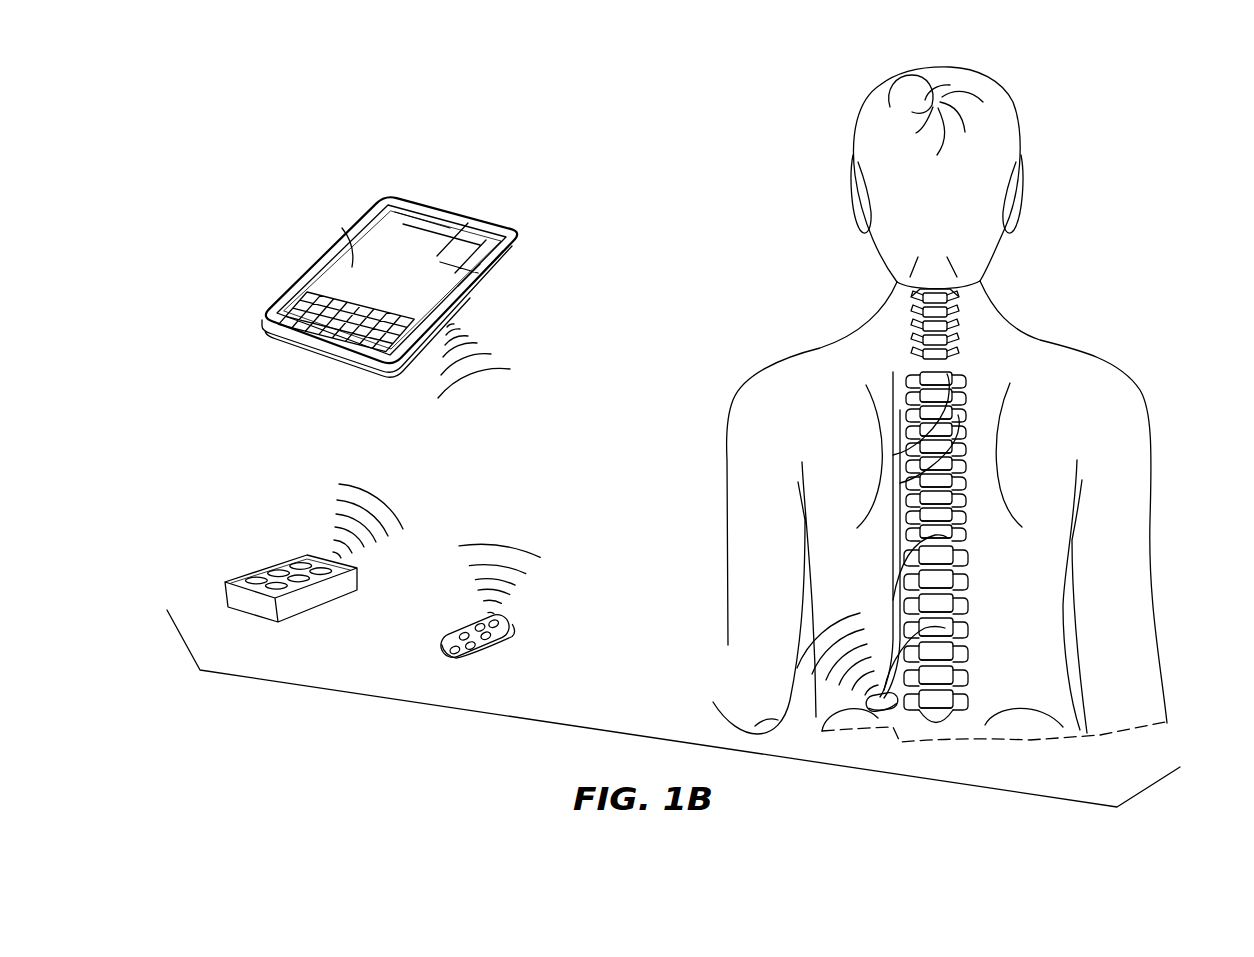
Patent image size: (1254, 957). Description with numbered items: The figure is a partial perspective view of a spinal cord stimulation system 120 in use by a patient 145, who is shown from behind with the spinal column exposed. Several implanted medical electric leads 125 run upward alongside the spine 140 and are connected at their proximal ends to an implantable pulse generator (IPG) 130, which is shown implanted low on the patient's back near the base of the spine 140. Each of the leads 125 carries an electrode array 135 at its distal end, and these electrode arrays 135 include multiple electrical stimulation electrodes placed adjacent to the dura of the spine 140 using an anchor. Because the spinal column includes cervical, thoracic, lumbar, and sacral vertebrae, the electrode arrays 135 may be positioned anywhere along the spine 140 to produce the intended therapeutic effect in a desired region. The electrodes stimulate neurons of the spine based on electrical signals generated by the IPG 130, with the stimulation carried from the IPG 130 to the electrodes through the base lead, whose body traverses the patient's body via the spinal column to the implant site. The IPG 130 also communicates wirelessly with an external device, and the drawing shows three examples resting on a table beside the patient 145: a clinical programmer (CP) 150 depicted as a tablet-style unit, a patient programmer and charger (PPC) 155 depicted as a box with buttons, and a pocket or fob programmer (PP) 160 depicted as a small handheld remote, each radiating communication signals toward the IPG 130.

The spinal cord stimulation system 120 is at (413, 705).
The implanted medical electric leads 125 is at (907, 482).
The implantable pulse generator (IPG) 130 is at (880, 702).
The electrode arrays 135 is at (957, 393).
The spine 140 is at (950, 297).
The patient 145 is at (1153, 432).
The clinical programmer (CP) 150 is at (467, 212).
The patient programmer and charger (PPC) 155 is at (317, 598).
The pocket (or fob) programmer (PP) 160 is at (505, 633).